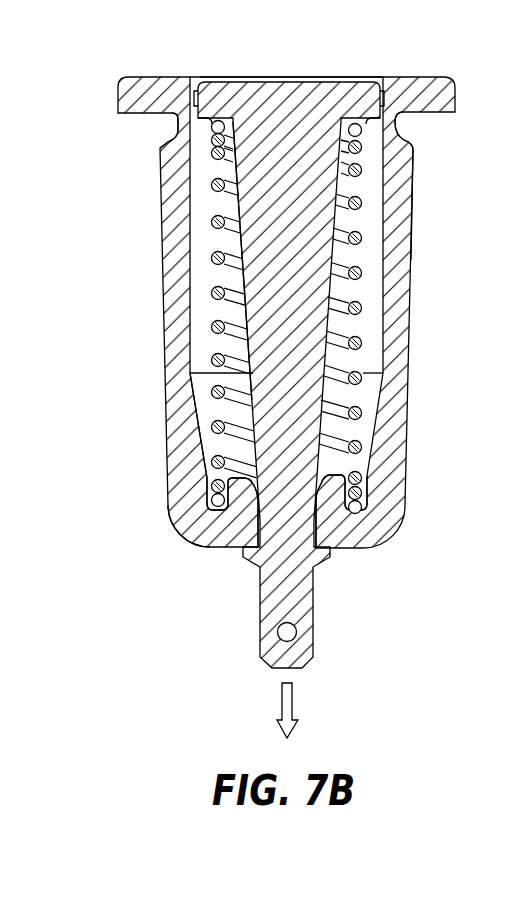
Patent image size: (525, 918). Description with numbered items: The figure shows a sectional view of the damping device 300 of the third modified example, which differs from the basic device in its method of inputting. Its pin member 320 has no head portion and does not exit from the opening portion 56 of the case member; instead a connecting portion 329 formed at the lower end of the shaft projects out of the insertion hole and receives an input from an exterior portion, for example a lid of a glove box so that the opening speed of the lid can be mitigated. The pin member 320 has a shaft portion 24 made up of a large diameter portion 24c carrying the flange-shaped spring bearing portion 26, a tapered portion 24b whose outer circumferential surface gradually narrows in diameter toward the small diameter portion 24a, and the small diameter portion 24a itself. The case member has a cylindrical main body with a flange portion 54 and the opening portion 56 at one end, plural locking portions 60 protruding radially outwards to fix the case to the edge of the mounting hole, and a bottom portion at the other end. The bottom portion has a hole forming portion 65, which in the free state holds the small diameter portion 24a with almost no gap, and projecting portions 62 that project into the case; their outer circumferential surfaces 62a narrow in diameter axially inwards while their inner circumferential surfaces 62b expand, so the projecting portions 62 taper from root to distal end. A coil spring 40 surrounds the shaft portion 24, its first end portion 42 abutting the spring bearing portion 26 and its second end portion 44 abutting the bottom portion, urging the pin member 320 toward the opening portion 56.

The shaft portion 24 is at (313, 286).
The small diameter portion 24a is at (196, 408).
The tapered portion 24b is at (249, 311).
The large diameter portion 24c is at (243, 170).
The spring bearing portion 26 is at (177, 131).
The coil spring 40 is at (343, 335).
The first end portion 42 is at (396, 127).
The second end portion 44 is at (365, 508).
The flange portion 54 is at (457, 99).
The opening portion 56 is at (314, 76).
The locking portions 60 is at (414, 150).
The projecting portions 62 is at (205, 547).
The outer circumferential surfaces 62a is at (208, 490).
The inner circumferential surfaces 62b is at (240, 500).
The hole forming portion 65 is at (320, 515).
The damping device 300 is at (398, 609).
The pin member 320 is at (256, 230).
The connecting portion 329 is at (278, 631).